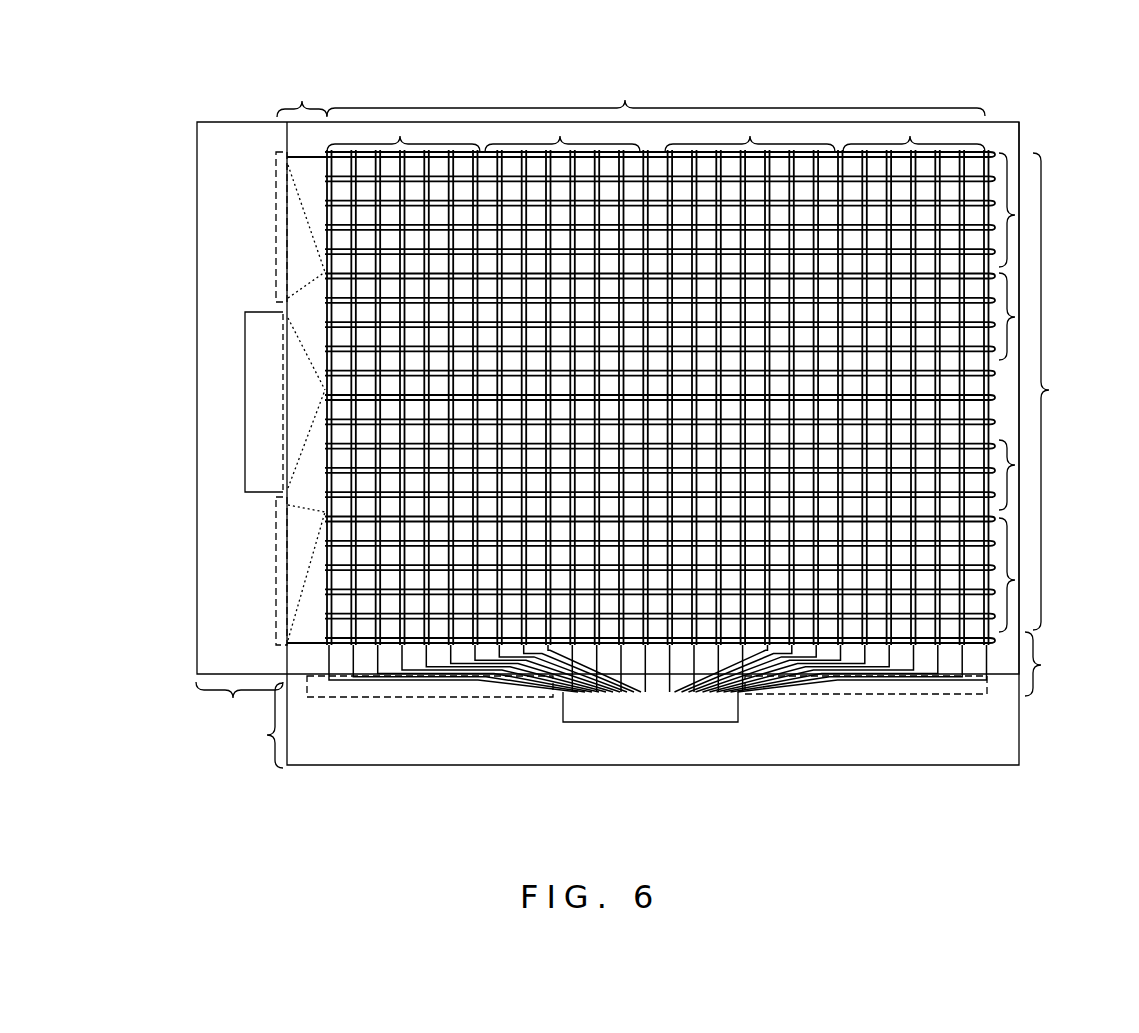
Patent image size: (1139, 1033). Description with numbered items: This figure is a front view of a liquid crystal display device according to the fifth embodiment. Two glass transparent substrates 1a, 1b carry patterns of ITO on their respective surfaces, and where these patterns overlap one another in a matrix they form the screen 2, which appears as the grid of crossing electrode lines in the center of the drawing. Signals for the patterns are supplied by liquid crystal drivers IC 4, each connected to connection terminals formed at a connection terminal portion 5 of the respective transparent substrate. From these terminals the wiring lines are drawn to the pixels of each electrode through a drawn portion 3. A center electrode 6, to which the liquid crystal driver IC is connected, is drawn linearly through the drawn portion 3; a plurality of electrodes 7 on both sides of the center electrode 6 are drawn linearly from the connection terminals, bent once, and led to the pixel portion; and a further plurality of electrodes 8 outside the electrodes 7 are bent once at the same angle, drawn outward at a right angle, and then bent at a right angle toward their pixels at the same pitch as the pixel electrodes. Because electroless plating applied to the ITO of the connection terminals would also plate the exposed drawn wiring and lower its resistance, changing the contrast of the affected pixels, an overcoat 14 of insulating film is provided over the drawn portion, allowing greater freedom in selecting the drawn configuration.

The transparent substrate 1a is at (215, 540).
The transparent substrate 1b is at (355, 765).
The screen 2 is at (682, 352).
The drawn portion 3 is at (673, 383).
The liquid crystal driver IC 4 is at (262, 415).
The connection terminal portion 5 is at (239, 725).
The center electrode 6 is at (650, 150).
The electrodes 7 is at (560, 136).
The electrodes 8 is at (400, 136).
The overcoat 14 is at (276, 243).